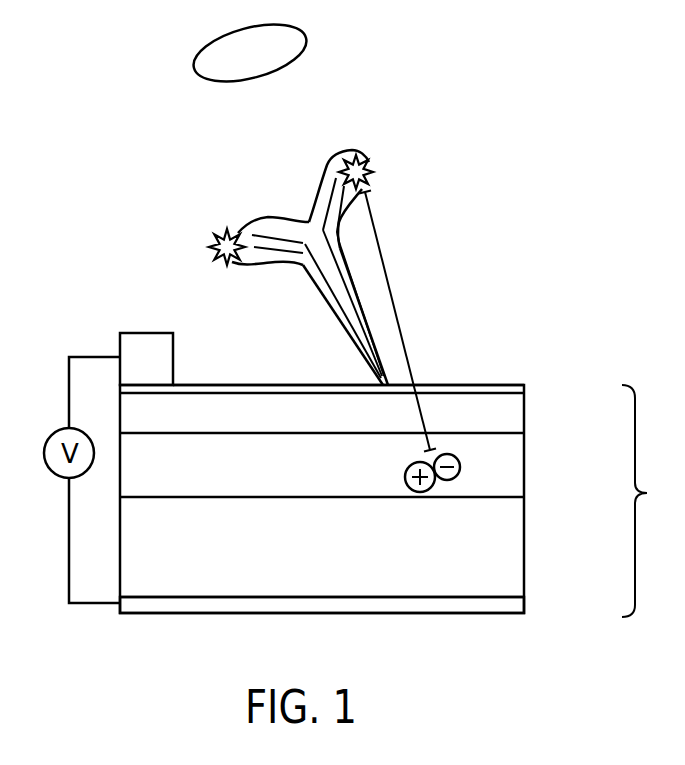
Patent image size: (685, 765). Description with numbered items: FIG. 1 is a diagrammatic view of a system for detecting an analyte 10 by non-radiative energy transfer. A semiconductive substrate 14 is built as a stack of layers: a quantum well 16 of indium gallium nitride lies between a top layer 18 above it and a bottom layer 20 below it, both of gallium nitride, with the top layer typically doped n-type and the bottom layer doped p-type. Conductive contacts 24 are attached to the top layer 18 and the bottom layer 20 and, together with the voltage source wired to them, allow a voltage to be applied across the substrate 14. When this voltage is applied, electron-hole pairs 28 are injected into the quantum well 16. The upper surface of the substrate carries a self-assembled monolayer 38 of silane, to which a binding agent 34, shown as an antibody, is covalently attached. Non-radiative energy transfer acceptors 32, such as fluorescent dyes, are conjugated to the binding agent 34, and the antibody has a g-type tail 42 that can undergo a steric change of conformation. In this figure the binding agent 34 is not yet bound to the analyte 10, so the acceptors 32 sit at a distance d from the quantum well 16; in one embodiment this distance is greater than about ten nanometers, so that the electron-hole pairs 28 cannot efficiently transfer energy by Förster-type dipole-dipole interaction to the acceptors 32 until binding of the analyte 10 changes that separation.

The analyte 10 is at (277, 60).
The semiconductive substrate 14 is at (400, 501).
The quantum well 16 is at (525, 468).
The top layer 18 is at (525, 407).
The bottom layer 20 is at (525, 542).
The conductive contacts 24 is at (147, 338).
The electron-hole pairs 28 is at (440, 492).
The non-radiative energy transfer acceptor 32 is at (373, 173).
The binding agent 34 is at (244, 217).
The self-assembled monolayer 38 is at (502, 385).
The g-type tail 42 is at (318, 305).
The distance d is at (398, 322).